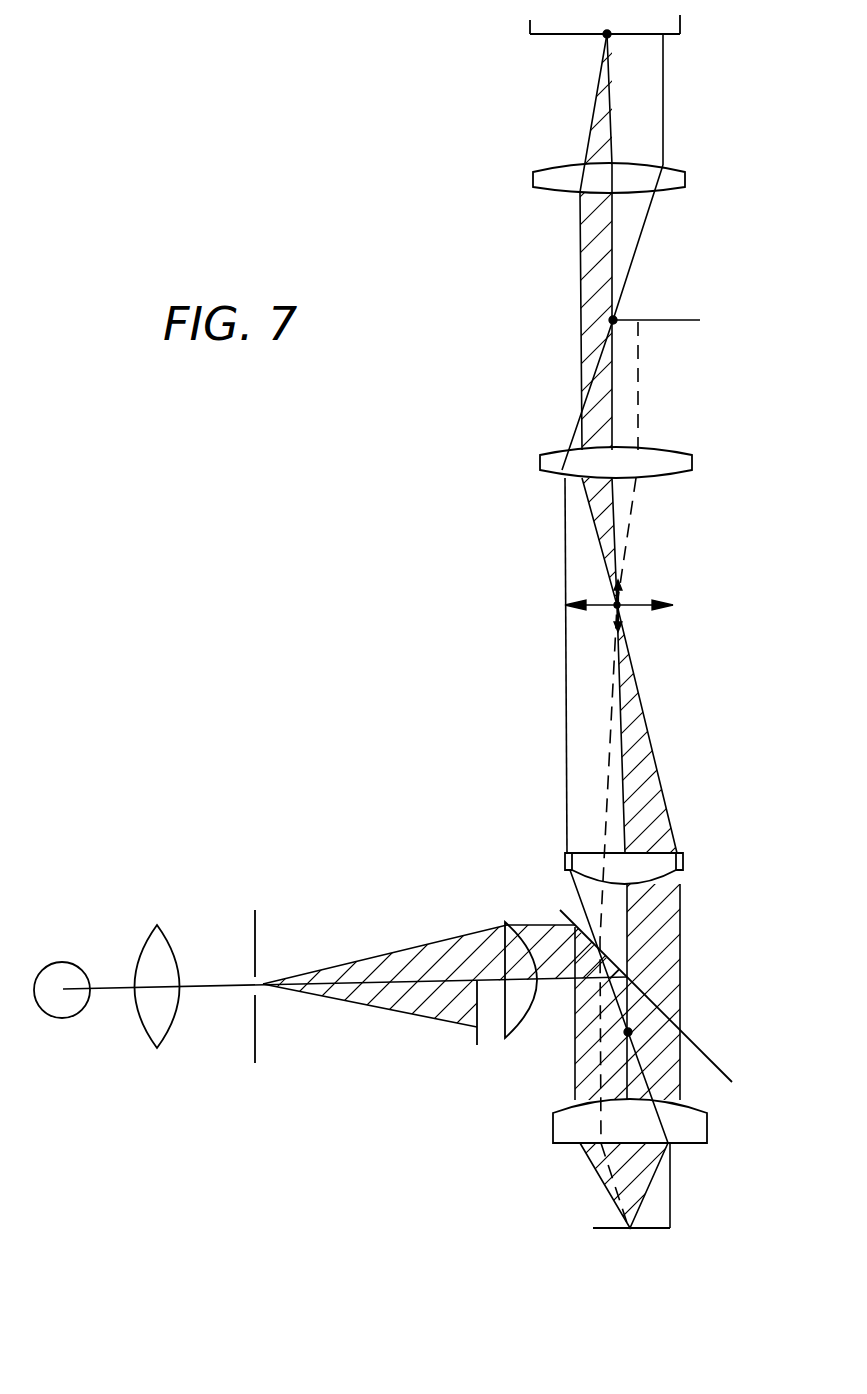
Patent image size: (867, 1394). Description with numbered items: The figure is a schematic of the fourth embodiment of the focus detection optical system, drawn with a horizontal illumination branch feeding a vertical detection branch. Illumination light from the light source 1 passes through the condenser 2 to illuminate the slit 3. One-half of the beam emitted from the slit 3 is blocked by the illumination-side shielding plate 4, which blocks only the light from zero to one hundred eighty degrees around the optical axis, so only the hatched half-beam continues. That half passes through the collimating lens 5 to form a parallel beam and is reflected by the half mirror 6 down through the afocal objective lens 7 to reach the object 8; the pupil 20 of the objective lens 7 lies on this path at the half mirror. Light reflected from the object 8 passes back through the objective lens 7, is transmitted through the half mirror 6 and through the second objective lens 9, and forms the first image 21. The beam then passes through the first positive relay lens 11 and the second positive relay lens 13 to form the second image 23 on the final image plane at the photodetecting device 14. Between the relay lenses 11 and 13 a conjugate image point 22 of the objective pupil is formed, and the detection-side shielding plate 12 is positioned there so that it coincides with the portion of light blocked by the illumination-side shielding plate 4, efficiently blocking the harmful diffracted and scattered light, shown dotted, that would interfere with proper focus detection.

The light source 1 is at (68, 978).
The condenser 2 is at (160, 948).
The slit 3 is at (258, 937).
The illumination-side shielding plate 4 is at (477, 1027).
The collimating lens 5 is at (508, 922).
The half mirror 6 is at (731, 1065).
The objective lens 7 is at (697, 1120).
The object 8 is at (608, 1232).
The second objective lens 9 is at (686, 862).
The first positive relay lens 11 is at (686, 458).
The detection-side shielding plate 12 is at (680, 318).
The second positive relay lens 13 is at (686, 178).
The photodetecting device 14 is at (528, 20).
The pupil of the objective lens 20 is at (631, 1030).
The first image 21 is at (622, 608).
The conjugate image point 22 is at (612, 318).
The second image 23 is at (604, 38).